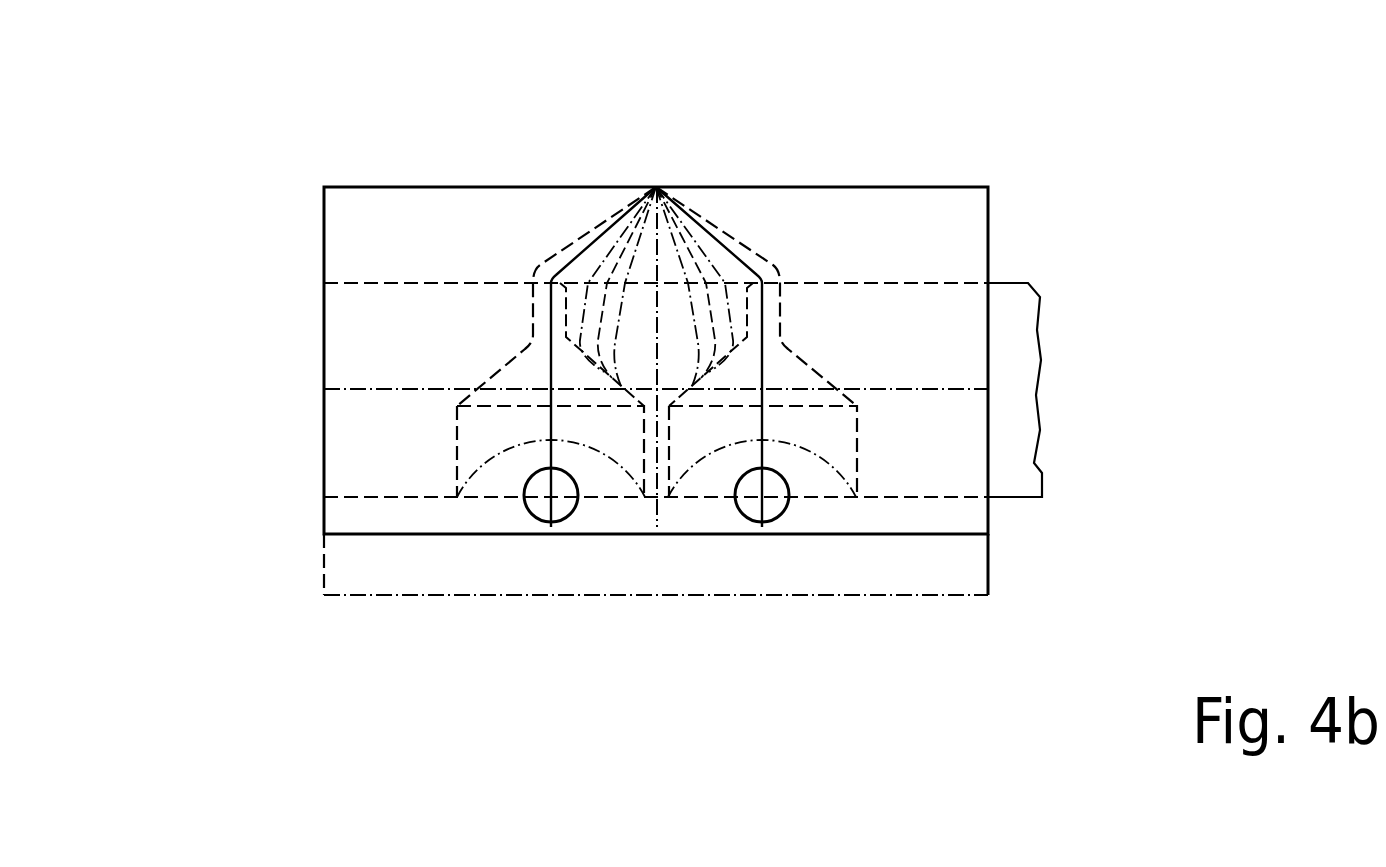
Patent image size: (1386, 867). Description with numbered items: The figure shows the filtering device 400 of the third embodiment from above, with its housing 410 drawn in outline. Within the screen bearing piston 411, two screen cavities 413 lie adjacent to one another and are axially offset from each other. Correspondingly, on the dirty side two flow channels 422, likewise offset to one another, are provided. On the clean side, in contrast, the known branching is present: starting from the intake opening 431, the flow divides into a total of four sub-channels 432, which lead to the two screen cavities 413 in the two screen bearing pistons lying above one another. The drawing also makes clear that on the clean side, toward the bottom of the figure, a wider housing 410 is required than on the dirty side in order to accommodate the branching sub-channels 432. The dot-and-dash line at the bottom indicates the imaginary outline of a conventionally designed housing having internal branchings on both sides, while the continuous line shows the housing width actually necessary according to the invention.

The filtering device 400 is at (203, 185).
The housing body 410 is at (882, 188).
The screen bearing piston 411 is at (1013, 300).
The screen cavity 413 is at (498, 482).
The flow channel 422 is at (557, 498).
The intake opening 431 is at (665, 195).
The sub-channel 432 is at (582, 253).